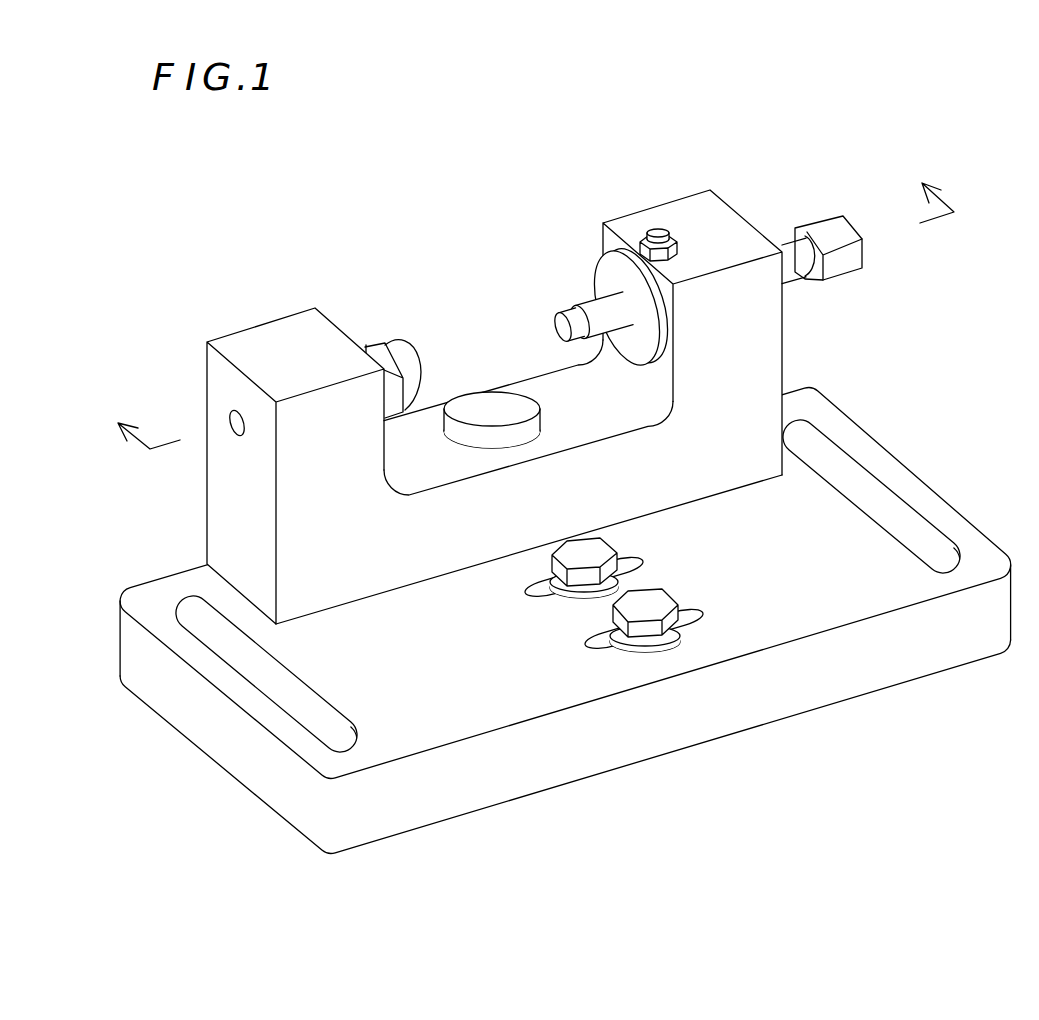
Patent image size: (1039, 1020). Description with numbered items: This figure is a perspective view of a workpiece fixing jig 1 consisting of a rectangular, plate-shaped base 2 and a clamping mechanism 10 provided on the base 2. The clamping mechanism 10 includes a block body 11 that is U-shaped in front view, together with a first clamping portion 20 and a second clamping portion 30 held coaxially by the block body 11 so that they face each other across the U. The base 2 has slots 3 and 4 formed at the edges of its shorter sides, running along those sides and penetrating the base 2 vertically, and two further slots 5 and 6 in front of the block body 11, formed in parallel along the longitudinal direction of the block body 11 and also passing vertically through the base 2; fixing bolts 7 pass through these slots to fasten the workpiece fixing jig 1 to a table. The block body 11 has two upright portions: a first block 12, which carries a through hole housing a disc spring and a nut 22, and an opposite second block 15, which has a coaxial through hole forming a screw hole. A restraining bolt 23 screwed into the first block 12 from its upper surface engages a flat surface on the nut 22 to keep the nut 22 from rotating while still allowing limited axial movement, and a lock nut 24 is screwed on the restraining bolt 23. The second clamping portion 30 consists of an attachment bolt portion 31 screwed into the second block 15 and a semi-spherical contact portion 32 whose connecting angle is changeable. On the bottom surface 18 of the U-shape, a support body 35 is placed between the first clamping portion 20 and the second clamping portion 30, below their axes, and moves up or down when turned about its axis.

The workpiece fixing jig 1 is at (246, 245).
The base 2 is at (565, 621).
The slot 3 is at (870, 492).
The slot 4 is at (270, 673).
The slot 5 is at (603, 645).
The slot 6 is at (540, 590).
The fixing bolt 7 is at (668, 620).
The clamping mechanism 10 is at (707, 233).
The block body 11 is at (506, 407).
The first block 12 is at (774, 344).
The second block 15 is at (214, 513).
The bottom surface 18 is at (557, 397).
The first clamping portion 20 is at (580, 310).
The nut 22 is at (607, 268).
The restraining bolt 23 is at (662, 235).
The lock nut 24 is at (645, 234).
The second clamping portion 30 is at (386, 327).
The attachment bolt portion 31 is at (368, 343).
The semi-spherical contact portion 32 is at (403, 352).
The support body 35 is at (498, 410).